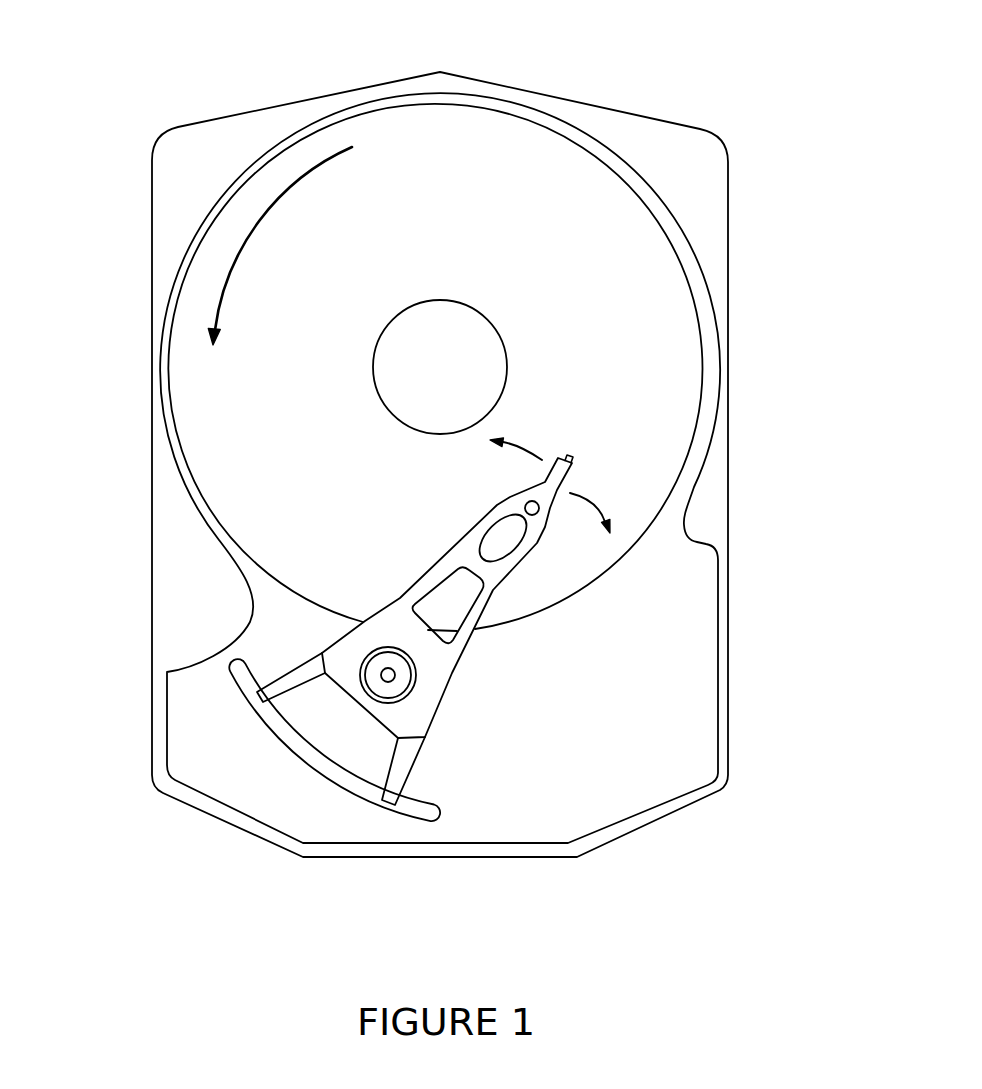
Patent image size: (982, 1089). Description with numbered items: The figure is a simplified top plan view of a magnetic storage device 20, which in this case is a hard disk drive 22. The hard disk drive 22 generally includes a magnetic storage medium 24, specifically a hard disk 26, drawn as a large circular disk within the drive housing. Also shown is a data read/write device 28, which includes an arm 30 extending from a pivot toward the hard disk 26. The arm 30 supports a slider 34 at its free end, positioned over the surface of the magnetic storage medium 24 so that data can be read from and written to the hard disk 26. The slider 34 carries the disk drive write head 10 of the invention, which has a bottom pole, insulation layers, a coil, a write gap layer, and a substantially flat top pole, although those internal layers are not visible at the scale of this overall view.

The write head 10 is at (295, 70).
The magnetic storage device 20 is at (225, 107).
The hard disk drive 22 is at (135, 260).
The magnetic storage medium 24 is at (642, 269).
The hard disk 26 is at (633, 344).
The data read/write device 28 is at (587, 447).
The arm 30 is at (549, 489).
The slider 34 is at (573, 462).